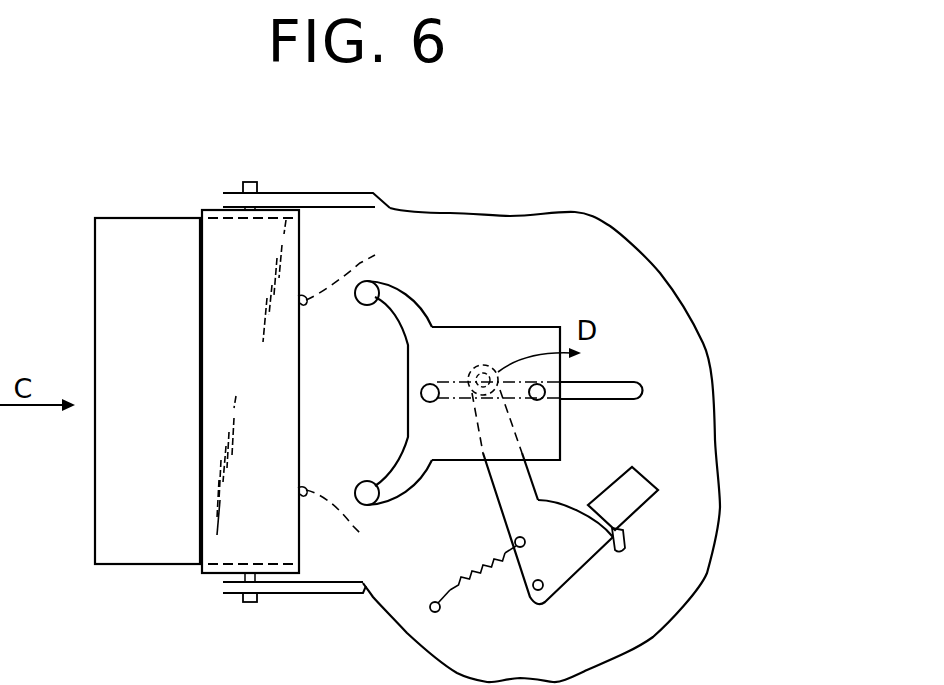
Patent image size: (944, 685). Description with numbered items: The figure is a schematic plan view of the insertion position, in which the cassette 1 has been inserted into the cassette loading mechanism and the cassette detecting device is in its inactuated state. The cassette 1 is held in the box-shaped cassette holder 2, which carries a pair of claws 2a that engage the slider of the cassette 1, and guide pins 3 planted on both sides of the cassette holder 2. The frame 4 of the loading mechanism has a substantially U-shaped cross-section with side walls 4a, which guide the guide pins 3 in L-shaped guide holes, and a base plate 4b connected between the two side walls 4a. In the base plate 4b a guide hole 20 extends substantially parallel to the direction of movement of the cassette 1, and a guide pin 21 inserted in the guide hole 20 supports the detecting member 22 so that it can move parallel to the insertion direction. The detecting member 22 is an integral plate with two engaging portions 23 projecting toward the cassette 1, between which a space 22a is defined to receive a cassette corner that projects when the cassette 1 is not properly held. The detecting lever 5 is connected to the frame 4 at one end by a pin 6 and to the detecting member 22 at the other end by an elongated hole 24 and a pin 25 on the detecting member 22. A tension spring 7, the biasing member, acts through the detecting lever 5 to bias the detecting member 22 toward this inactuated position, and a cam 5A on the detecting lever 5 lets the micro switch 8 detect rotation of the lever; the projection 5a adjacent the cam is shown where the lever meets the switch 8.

The cassette 1 is at (160, 217).
The cassette holder 2 is at (217, 535).
The claws 2a is at (375, 255).
The guide pins 3 is at (258, 185).
The frame 4 is at (587, 230).
The side walls 4a is at (312, 192).
The base plate 4b is at (517, 223).
The detecting lever 5 is at (572, 563).
The cam 5A is at (548, 518).
The engagement projection 5a is at (605, 553).
The pin 6 is at (542, 592).
The biasing member 7 is at (478, 583).
The detecting element 8 is at (637, 498).
The guide hole 20 is at (622, 378).
The guide pin 21 is at (550, 393).
The detecting member 22 is at (480, 325).
The space 22a is at (405, 388).
The engaging portions 23 is at (398, 292).
The elongated hole 24 is at (490, 531).
The pin 25 is at (500, 367).